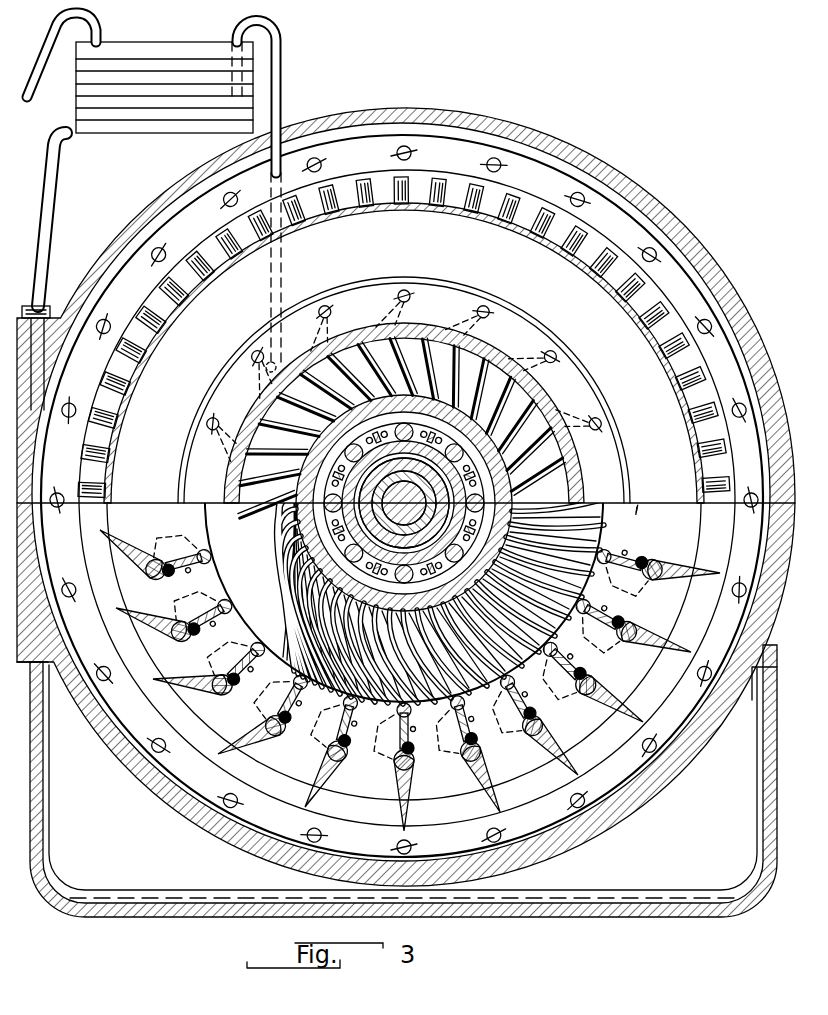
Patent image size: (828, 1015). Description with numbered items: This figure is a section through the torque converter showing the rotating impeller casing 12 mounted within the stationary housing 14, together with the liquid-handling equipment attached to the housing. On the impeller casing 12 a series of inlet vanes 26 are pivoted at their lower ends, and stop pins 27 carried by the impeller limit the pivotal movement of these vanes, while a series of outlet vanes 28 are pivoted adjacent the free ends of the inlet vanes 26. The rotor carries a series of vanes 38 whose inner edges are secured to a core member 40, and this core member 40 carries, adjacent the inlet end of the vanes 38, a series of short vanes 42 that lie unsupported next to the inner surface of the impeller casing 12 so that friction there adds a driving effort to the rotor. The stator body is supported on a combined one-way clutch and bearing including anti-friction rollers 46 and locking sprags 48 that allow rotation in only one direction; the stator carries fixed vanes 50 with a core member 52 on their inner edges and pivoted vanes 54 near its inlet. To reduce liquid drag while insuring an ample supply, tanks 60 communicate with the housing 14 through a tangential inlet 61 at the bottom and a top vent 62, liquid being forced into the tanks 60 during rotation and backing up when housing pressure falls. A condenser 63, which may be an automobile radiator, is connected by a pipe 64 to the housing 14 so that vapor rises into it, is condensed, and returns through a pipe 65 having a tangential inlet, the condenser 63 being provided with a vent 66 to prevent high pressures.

The impeller casing 12 is at (540, 178).
The stationary housing 14 is at (452, 119).
The inlet vanes 26 is at (206, 611).
The stop pins 27 is at (186, 560).
The outlet vanes 28 is at (160, 580).
The rotor vanes 38 is at (404, 501).
The core member 40 is at (350, 280).
The short vanes 42 is at (508, 201).
The anti-friction rollers 46 is at (455, 447).
The locking sprags 48 is at (437, 430).
The fixed vanes 50 is at (345, 356).
The core member 52 is at (533, 389).
The pivoted vanes 54 is at (355, 321).
The tanks 60 is at (133, 863).
The tangential inlet 61 is at (515, 890).
The top vent 62 is at (758, 690).
The condenser 63 is at (150, 49).
The pipe 64 is at (281, 86).
The pipe 65 is at (58, 217).
The vent 66 is at (58, 26).